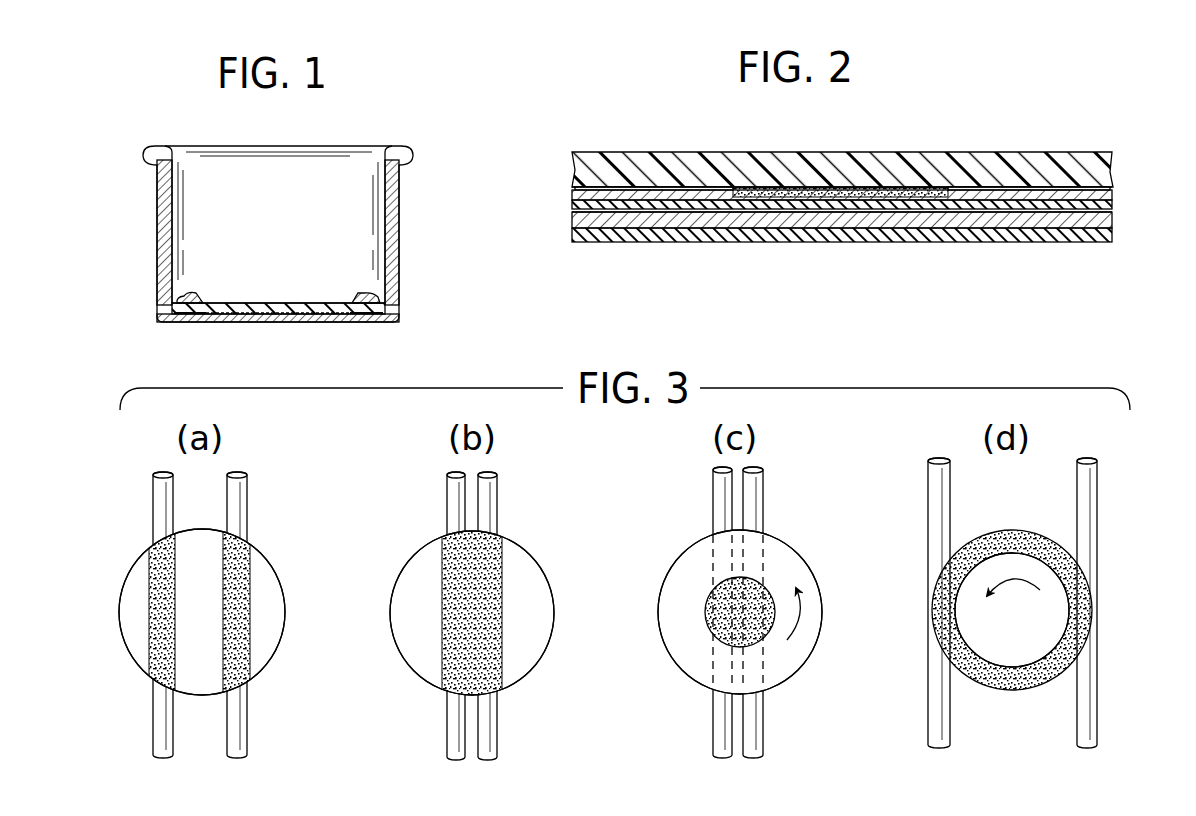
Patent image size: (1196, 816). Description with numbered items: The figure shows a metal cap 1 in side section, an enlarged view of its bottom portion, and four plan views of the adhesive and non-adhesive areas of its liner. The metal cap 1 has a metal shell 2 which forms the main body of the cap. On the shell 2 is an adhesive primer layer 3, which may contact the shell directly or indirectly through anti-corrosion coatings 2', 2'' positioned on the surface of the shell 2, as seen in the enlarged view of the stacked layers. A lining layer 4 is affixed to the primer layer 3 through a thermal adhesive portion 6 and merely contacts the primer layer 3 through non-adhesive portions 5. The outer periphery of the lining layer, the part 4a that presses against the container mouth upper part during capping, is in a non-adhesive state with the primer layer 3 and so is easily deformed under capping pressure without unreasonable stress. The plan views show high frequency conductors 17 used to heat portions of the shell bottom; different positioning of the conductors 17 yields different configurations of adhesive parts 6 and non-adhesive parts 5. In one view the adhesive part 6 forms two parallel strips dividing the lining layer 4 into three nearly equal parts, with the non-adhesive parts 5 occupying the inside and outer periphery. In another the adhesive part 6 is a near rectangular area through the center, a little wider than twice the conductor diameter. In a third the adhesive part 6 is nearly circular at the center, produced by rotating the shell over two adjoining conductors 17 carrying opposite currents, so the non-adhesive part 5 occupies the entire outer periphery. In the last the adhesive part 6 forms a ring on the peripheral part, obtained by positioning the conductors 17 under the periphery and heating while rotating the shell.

In FIG. 1, the metal cap 1 is at (350, 136).
In FIG. 1, the metal shell 2 is at (249, 237).
In FIG. 2, the metal shell 2 is at (865, 223).
In FIG. 2, the anti-corrosion coating 2' is at (870, 248).
In FIG. 2, the anti-corrosion coating 2'' is at (873, 192).
In FIG. 1, the adhesive primer layer 3 is at (172, 220).
In FIG. 2, the adhesive primer layer 3 is at (1112, 188).
In FIG. 1, the lining layer 4 is at (282, 303).
In FIG. 2, the lining layer 4 is at (938, 150).
In FIG. 3, the lining layer 4 is at (280, 669).
In FIG. 1, the outer periphery of the lining layer 4a is at (192, 298).
In FIG. 1, the non-adhesive portion 5 is at (207, 318).
In FIG. 2, the non-adhesive portion 5 is at (652, 187).
In FIG. 3, the non-adhesive portion 5 is at (265, 594).
In FIG. 1, the thermal adhesive portion 6 is at (270, 318).
In FIG. 2, the thermal adhesive portion 6 is at (830, 190).
In FIG. 3, the thermal adhesive portion 6 is at (240, 573).
In FIG. 3, the high frequency conductor 17 is at (158, 510).